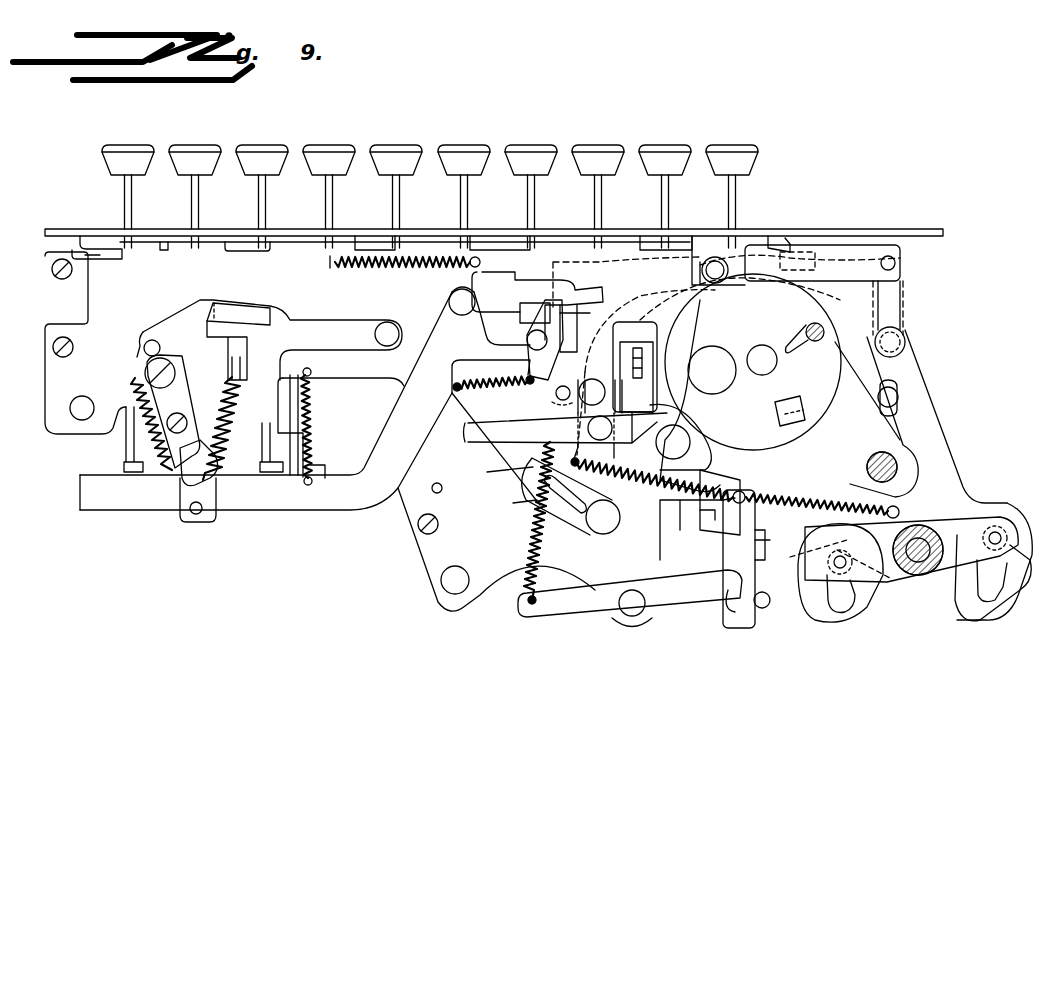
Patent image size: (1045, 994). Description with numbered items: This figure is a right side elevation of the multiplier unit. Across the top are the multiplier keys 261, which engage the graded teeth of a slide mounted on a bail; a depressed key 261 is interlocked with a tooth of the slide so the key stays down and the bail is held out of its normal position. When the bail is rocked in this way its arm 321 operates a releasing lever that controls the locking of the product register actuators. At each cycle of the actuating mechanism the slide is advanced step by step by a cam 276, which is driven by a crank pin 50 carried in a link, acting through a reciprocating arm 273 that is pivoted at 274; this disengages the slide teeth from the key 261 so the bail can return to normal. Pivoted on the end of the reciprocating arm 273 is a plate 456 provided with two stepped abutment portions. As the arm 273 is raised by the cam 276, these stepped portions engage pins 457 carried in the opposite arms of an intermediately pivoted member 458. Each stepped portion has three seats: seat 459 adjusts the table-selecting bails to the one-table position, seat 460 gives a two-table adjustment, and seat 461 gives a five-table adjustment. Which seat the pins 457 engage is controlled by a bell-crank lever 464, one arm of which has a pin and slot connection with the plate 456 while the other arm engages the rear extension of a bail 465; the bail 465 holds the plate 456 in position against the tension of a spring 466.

The multiplier keys 261 is at (590, 153).
The arm of bail 321 is at (235, 365).
The bail 465 is at (812, 258).
The bell-crank lever 464 is at (893, 290).
The reciprocating arm 273 is at (878, 318).
The crank pin 50 is at (808, 330).
The cam 276 is at (757, 428).
The pivot of reciprocating arm 274 is at (556, 394).
The spring 466 is at (742, 500).
The plate 456 is at (940, 465).
The pins 457 is at (995, 532).
The intermediately pivoted member 458 is at (940, 522).
The seat 459 is at (856, 590).
The seat 460 is at (835, 605).
The seat 461 is at (810, 594).